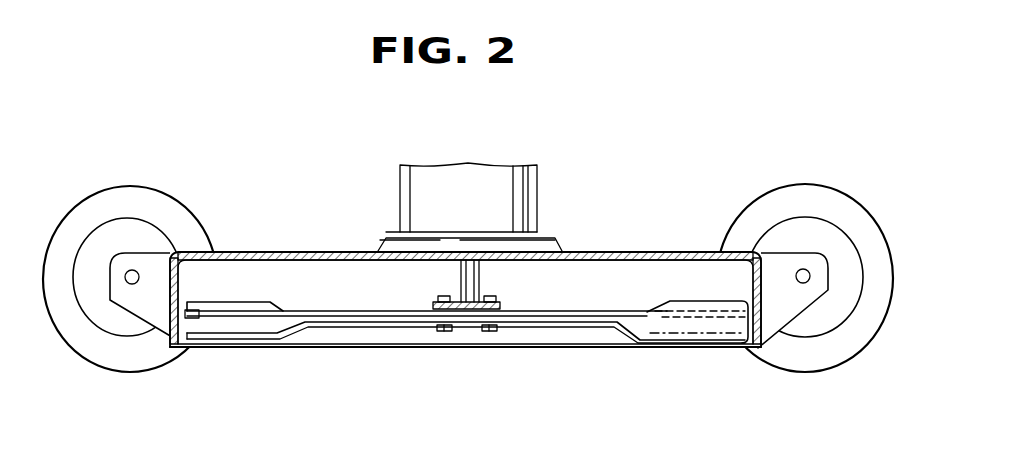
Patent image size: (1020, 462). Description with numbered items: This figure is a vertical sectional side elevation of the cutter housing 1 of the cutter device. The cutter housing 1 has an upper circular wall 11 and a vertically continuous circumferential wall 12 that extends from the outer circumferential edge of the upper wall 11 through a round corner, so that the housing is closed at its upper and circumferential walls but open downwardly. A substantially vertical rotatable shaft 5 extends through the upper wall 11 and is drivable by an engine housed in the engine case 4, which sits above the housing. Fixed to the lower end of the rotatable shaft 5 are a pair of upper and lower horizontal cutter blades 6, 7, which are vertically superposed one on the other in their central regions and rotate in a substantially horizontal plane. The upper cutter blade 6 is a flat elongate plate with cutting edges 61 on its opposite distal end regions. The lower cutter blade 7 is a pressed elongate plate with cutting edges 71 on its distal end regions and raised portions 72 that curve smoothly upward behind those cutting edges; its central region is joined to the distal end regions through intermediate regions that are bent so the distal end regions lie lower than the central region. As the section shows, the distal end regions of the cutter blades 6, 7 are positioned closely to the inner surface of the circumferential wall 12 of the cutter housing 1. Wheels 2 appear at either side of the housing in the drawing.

The cutter housing 1 is at (475, 295).
The wheel 2 is at (87, 333).
The engine case 4 is at (473, 165).
The rotatable shaft 5 is at (470, 278).
The upper cutter blade 6 is at (423, 299).
The lower cutter blade 7 is at (466, 368).
The upper circular wall 11 is at (585, 252).
The circumferential wall 12 is at (763, 313).
The cutting edges 61 is at (201, 314).
The cutting edges 71 is at (253, 339).
The raised portions 72 is at (248, 302).